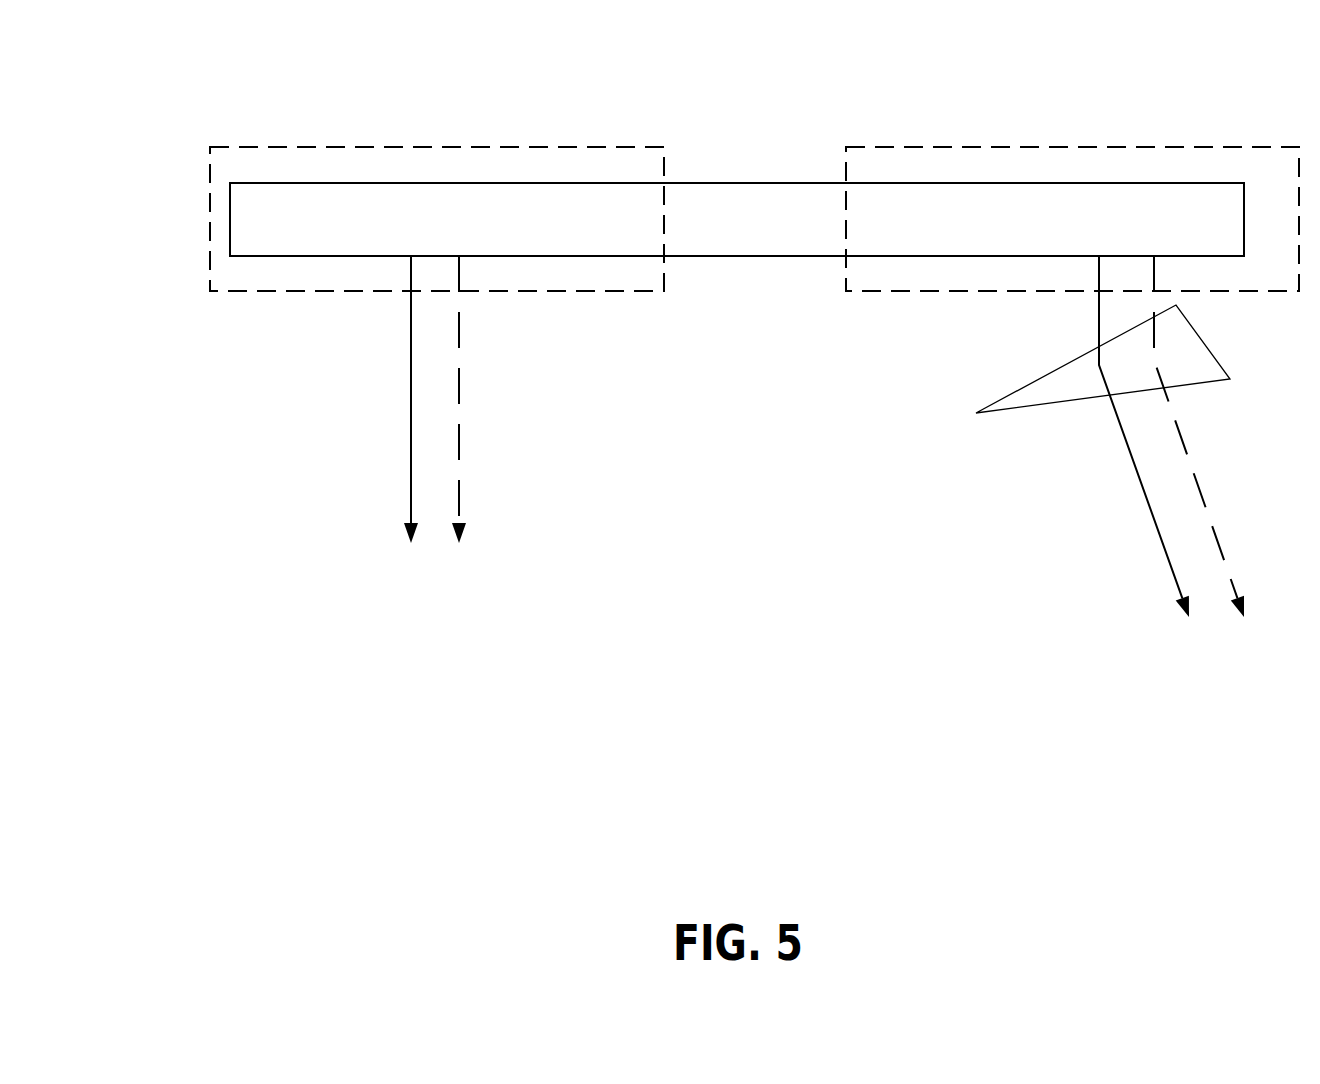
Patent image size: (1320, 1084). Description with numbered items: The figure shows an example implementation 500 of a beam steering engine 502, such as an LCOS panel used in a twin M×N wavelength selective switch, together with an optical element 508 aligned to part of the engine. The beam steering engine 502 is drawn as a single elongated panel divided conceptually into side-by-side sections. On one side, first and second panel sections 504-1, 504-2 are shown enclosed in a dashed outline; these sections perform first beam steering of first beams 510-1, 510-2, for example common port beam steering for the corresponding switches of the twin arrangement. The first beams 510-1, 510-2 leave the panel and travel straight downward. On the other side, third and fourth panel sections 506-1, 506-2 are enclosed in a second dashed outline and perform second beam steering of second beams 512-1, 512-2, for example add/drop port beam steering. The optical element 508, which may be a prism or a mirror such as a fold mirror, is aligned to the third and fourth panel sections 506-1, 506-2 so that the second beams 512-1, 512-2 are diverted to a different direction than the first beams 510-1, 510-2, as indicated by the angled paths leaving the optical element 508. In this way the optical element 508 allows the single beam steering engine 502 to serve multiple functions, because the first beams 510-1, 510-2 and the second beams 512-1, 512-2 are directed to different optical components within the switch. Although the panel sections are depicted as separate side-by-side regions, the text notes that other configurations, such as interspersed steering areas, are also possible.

The example implementation 500 is at (218, 61).
The beam steering engine 502 is at (737, 203).
The first panel section 504-1 is at (437, 194).
The second panel section 504-2 is at (437, 219).
The third panel section 506-1 is at (1072, 202).
The fourth panel section 506-2 is at (1072, 219).
The optical element 508 is at (1076, 366).
The first beam 510-1 is at (375, 399).
The first beam 510-2 is at (494, 399).
The second beam 512-1 is at (1124, 436).
The second beam 512-2 is at (1213, 436).